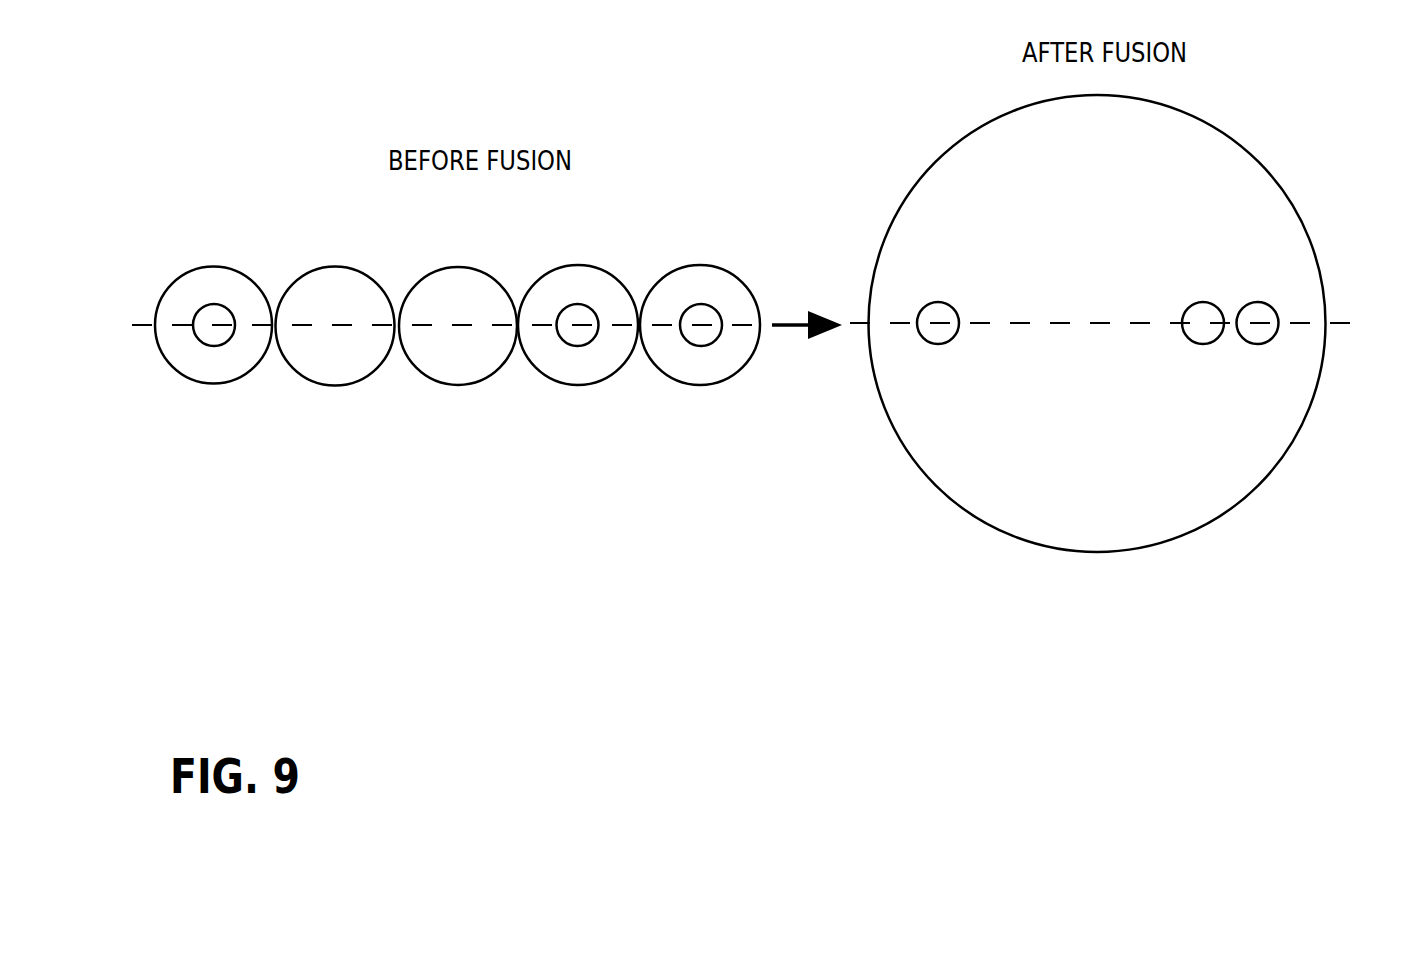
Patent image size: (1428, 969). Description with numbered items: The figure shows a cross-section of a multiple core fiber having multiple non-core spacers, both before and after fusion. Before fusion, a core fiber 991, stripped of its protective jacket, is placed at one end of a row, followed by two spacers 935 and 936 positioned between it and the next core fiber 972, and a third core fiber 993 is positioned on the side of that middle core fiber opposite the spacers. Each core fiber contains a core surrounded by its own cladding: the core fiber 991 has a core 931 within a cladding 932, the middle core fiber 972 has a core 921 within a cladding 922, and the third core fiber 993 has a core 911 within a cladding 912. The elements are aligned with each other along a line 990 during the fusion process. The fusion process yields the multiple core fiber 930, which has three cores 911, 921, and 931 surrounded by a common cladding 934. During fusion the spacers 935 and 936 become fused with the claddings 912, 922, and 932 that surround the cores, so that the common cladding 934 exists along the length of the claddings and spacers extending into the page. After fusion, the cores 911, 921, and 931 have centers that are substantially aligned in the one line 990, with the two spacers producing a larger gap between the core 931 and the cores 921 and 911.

The line 990 is at (133, 325).
The core fiber 991 is at (241, 262).
The spacer 935 is at (353, 262).
The spacer 936 is at (476, 262).
The fourth optical fiber 972 is at (597, 262).
The third core fiber 993 is at (717, 262).
The core 931 is at (211, 305).
The cladding 932 is at (232, 372).
The core 921 is at (575, 305).
The cladding 922 is at (597, 372).
The core 911 is at (709, 291).
The cladding 912 is at (720, 372).
The multiple core fiber 930 is at (1302, 183).
The common cladding 934 is at (1097, 323).